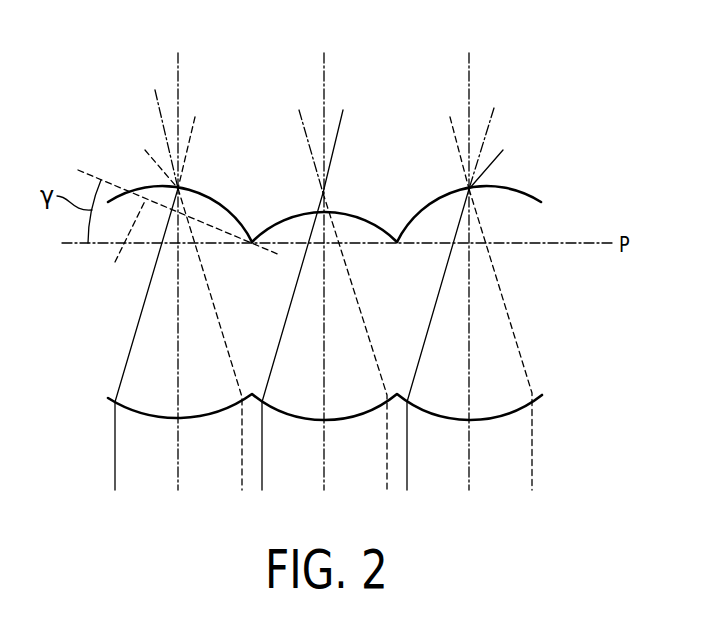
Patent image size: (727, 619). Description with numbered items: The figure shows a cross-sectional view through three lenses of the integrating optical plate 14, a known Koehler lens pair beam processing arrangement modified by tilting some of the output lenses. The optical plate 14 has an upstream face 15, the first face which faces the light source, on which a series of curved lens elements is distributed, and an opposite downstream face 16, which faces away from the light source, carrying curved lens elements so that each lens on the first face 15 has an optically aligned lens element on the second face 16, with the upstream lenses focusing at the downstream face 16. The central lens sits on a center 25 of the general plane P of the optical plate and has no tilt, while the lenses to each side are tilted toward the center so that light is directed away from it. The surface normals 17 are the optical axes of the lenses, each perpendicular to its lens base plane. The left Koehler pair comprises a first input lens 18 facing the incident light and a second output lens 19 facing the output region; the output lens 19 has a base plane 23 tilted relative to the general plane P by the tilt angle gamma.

The integrating optical plate 14 is at (522, 312).
The upstream face 15 is at (508, 410).
The downstream face 16 is at (540, 203).
The surface normal 17 is at (180, 80).
The first (input) lens 18 is at (110, 398).
The second (output) lens 19 is at (133, 187).
The base plane 23 is at (123, 247).
The center 25 is at (322, 243).